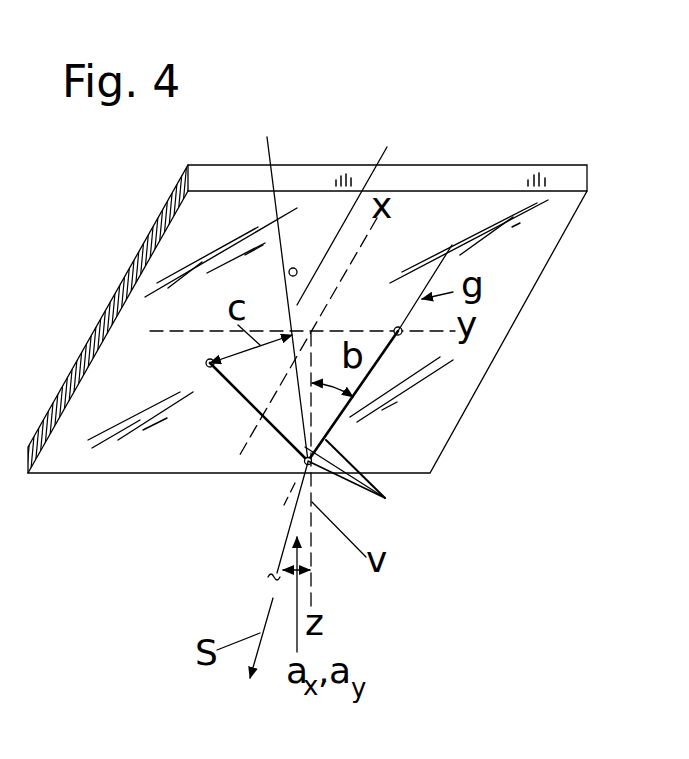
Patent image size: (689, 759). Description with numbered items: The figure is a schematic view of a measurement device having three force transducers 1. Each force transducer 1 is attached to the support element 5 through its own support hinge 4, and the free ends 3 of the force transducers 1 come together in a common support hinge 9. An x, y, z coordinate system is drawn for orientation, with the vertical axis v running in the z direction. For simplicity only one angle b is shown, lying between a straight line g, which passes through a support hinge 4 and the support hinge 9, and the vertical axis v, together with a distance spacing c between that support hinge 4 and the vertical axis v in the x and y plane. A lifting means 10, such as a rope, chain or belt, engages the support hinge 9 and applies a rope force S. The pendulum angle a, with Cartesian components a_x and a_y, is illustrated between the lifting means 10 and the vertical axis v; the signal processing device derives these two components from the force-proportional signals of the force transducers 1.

The force transducer 1 is at (487, 403).
The free end 3 is at (354, 489).
The support hinge 4 is at (522, 362).
The support element 5 is at (498, 176).
The support hinge 9 is at (306, 466).
The lifting means 10 is at (292, 525).